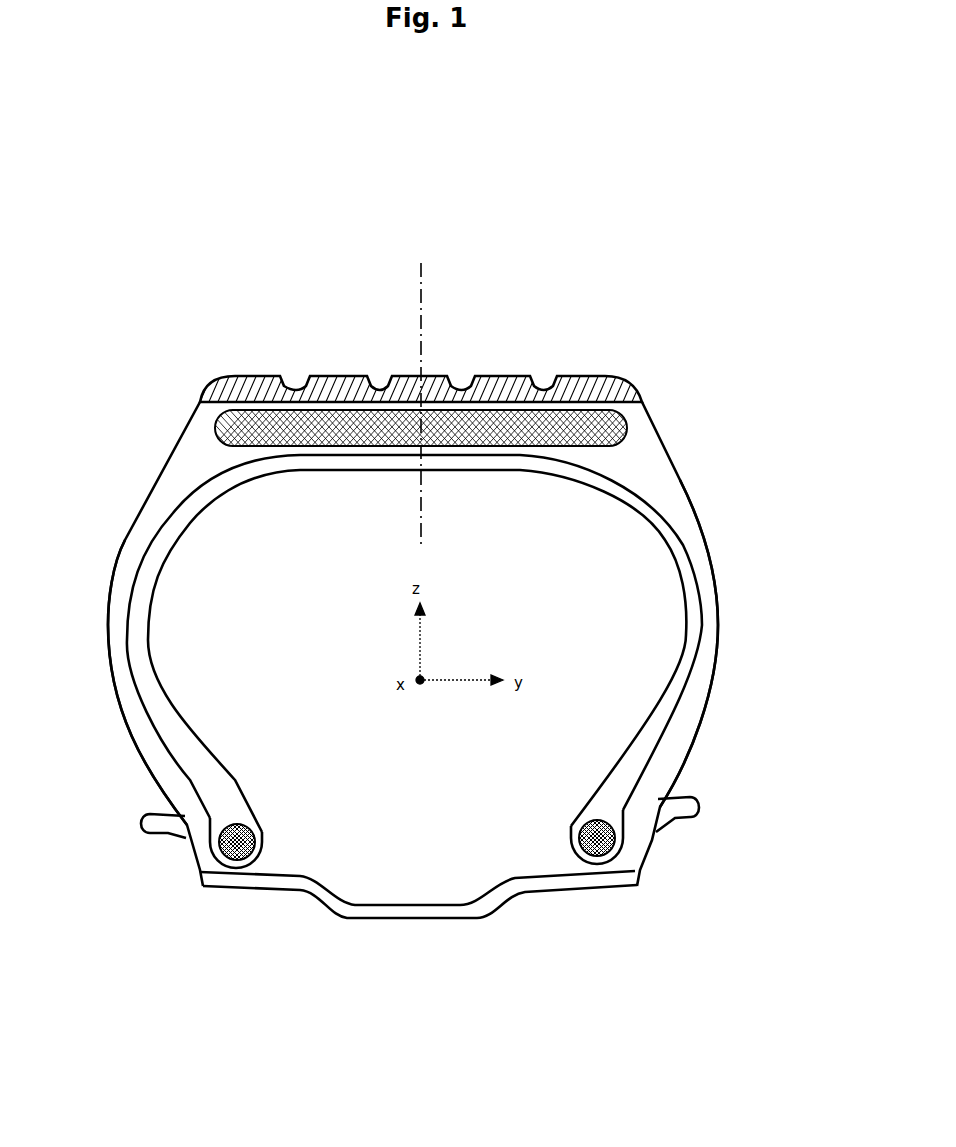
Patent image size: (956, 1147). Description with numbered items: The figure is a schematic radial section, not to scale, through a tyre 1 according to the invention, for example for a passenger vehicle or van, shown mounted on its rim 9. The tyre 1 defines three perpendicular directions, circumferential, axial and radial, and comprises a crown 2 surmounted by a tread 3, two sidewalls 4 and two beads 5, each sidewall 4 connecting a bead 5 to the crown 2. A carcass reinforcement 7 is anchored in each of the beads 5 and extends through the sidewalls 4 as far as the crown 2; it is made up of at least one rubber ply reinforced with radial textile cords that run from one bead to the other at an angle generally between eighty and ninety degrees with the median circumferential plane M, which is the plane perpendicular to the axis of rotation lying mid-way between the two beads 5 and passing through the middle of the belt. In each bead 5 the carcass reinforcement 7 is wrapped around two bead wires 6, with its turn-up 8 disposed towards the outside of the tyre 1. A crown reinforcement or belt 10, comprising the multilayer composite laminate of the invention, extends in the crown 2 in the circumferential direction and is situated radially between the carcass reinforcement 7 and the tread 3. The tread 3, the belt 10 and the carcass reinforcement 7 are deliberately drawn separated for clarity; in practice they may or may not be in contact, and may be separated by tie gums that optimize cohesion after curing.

The tyre 1 is at (745, 553).
The crown 2 is at (660, 399).
The tread 3 is at (512, 385).
The sidewall 4 is at (118, 625).
The bead 5 is at (262, 863).
The bead wire 6 is at (262, 840).
The carcass reinforcement 7 is at (137, 565).
The turn-up 8 is at (209, 818).
The rim 9 is at (197, 852).
The belt 10 is at (213, 425).
The median circumferential plane M is at (432, 270).